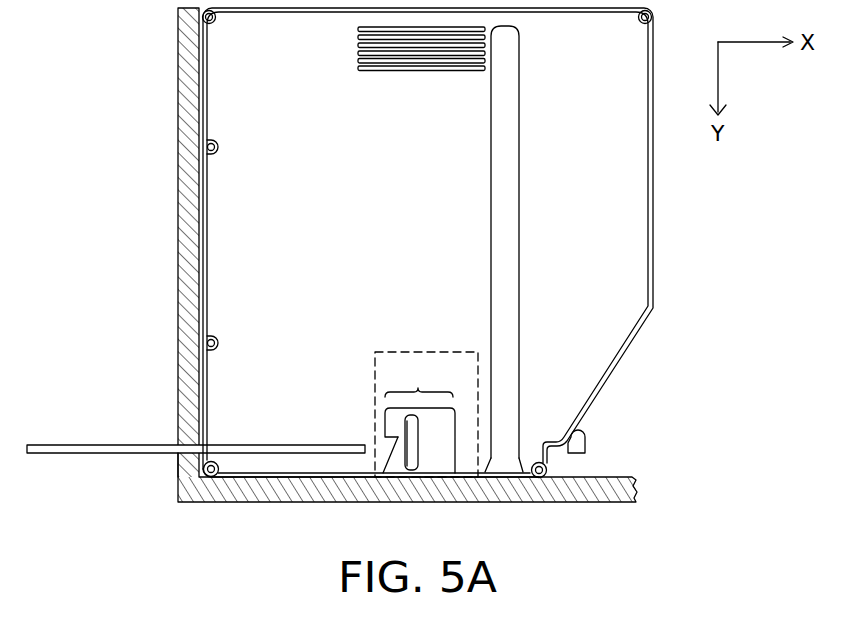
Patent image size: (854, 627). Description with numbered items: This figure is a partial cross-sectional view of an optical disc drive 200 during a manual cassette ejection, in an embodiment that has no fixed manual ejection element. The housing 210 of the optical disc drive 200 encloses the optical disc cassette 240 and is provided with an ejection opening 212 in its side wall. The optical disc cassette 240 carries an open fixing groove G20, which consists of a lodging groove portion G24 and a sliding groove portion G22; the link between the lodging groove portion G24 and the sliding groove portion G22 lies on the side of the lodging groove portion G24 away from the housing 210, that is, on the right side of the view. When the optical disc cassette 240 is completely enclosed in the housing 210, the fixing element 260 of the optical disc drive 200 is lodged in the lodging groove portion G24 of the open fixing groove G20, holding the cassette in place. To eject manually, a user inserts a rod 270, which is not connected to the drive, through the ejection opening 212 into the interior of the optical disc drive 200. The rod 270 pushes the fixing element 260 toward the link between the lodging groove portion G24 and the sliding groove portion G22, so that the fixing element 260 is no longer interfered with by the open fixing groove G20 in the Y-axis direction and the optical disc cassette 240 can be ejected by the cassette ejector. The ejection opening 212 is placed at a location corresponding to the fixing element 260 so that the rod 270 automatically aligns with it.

The optical disc drive 200 is at (708, 553).
The housing 210 is at (186, 218).
The ejection opening 212 is at (175, 457).
The optical disc cassette 240 is at (627, 170).
The fixing element 260 is at (400, 432).
The rod 270 is at (88, 449).
The open fixing groove G20 is at (375, 405).
The sliding groove portion G22 is at (470, 445).
The lodging groove portion G24 is at (419, 378).